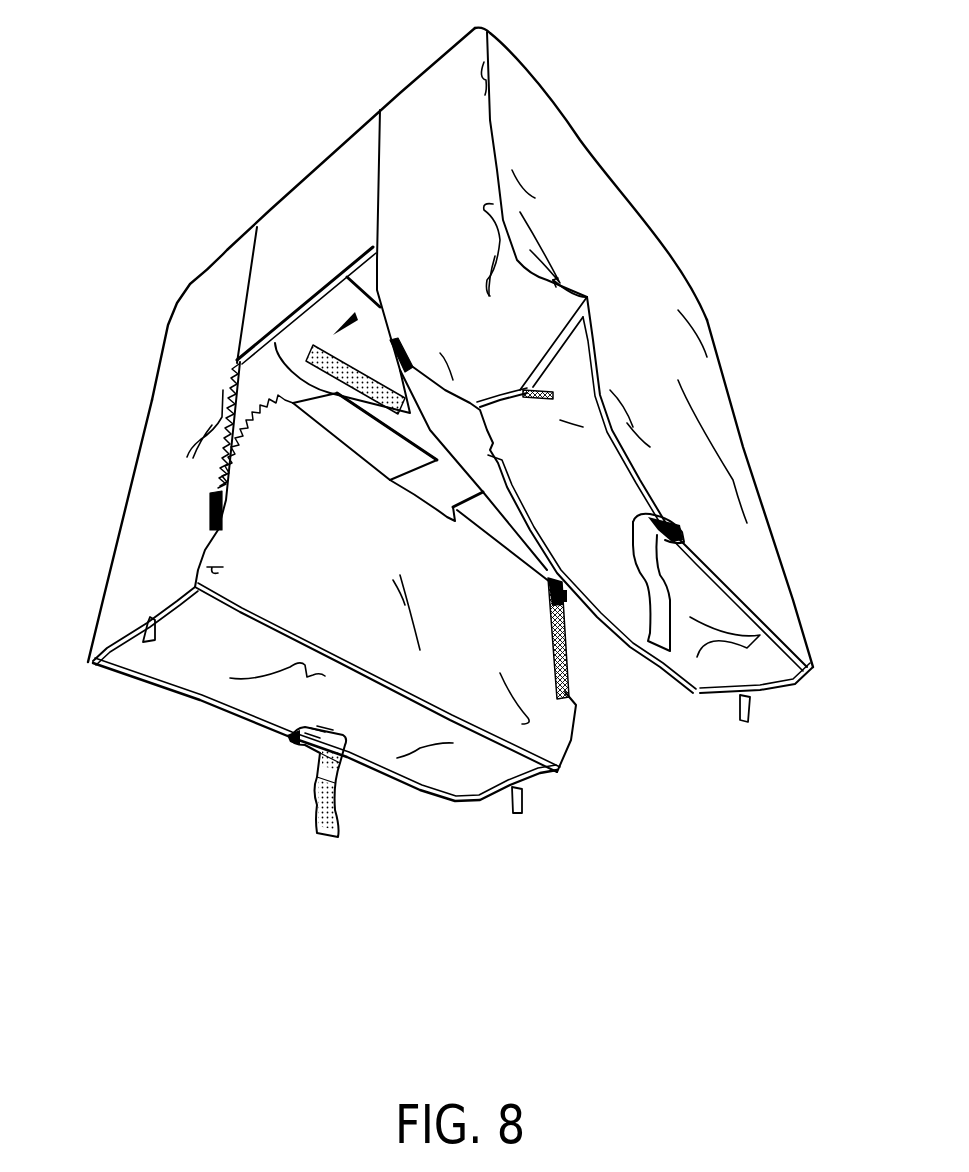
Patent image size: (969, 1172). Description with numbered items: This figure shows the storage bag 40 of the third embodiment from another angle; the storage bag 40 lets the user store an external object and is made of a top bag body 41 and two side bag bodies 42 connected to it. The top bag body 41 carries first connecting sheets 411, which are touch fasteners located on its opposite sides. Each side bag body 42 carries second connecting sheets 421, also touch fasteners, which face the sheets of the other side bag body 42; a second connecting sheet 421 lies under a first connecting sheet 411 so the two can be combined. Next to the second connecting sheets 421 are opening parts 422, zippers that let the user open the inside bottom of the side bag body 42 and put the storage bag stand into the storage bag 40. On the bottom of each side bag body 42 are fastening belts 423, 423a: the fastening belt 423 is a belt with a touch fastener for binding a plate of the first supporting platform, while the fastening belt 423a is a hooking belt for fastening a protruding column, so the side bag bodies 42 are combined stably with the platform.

The storage bag 40 is at (152, 116).
The top bag body 41 is at (308, 198).
The first connecting sheet 411 is at (283, 330).
The side bag body 42 is at (133, 548).
The second connecting sheet 421 is at (367, 330).
The opening part 422 is at (237, 470).
The fastening belt 423 is at (323, 838).
The fastening belt 423a is at (540, 400).